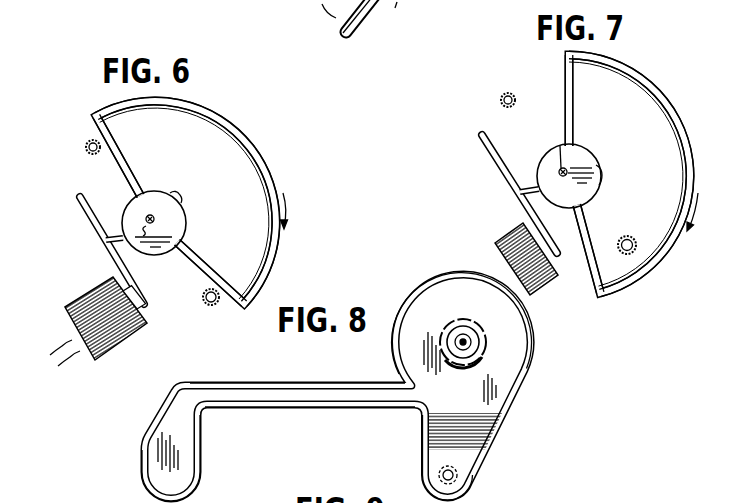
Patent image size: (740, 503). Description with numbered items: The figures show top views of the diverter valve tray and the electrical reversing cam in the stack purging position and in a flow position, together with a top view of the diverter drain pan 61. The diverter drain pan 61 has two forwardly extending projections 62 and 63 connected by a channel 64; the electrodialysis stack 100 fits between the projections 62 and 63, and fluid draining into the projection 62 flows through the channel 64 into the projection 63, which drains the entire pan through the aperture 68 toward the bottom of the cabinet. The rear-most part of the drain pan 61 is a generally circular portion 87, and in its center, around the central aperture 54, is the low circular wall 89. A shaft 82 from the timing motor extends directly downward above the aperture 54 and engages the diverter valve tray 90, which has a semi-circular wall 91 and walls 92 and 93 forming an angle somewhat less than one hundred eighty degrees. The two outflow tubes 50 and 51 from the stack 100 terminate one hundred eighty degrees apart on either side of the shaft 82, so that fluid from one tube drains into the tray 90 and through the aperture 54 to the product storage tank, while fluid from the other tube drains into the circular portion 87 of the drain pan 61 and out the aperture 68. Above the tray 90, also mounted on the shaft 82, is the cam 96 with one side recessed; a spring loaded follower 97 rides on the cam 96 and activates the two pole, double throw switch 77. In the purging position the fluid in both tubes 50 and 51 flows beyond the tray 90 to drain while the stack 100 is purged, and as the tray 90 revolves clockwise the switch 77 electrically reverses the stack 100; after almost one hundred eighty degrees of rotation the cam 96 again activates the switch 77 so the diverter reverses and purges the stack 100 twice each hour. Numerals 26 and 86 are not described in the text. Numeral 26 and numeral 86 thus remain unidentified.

In FIG. 6, the housing 26 is at (408, 9).
In FIG. 6, the outflow tube 50 is at (212, 305).
In FIG. 7, the outflow tube 50 is at (628, 236).
In FIG. 6, the outflow tube 51 is at (91, 140).
In FIG. 7, the outflow tube 51 is at (510, 92).
In FIG. 8, the central aperture 54 is at (465, 332).
In FIG. 8, the diverter drain pan 61 is at (340, 375).
In FIG. 8, the forwardly extending projection 62 is at (158, 490).
In FIG. 8, the forwardly extending projection 63 is at (478, 489).
In FIG. 8, the channel 64 is at (271, 395).
In FIG. 8, the aperture 68 is at (441, 474).
In FIG. 6, the two pole, double throw switch 77 is at (83, 306).
In FIG. 7, the two pole, double throw switch 77 is at (512, 235).
In FIG. 6, the shaft 82 is at (154, 223).
In FIG. 7, the shaft 82 is at (565, 150).
In FIG. 6, the lever end 86 is at (313, 9).
In FIG. 8, the generally circular portion 87 is at (435, 280).
In FIG. 8, the low circular wall 89 is at (486, 357).
In FIG. 6, the diverter valve tray 90 is at (191, 194).
In FIG. 7, the diverter valve tray 90 is at (630, 170).
In FIG. 6, the semi-circular wall 91 is at (257, 165).
In FIG. 7, the semi-circular wall 91 is at (670, 110).
In FIG. 6, the wall 92 is at (123, 169).
In FIG. 7, the wall 92 is at (574, 124).
In FIG. 6, the wall 93 is at (209, 267).
In FIG. 7, the wall 93 is at (592, 242).
In FIG. 6, the cam 96 is at (172, 196).
In FIG. 7, the cam 96 is at (600, 184).
In FIG. 6, the spring loaded follower 97 is at (99, 238).
In FIG. 7, the spring loaded follower 97 is at (492, 158).
In FIG. 6, the electrodialysis stack 100 is at (363, 16).